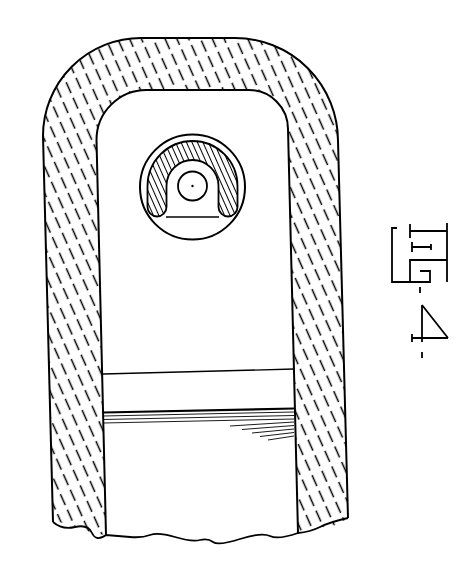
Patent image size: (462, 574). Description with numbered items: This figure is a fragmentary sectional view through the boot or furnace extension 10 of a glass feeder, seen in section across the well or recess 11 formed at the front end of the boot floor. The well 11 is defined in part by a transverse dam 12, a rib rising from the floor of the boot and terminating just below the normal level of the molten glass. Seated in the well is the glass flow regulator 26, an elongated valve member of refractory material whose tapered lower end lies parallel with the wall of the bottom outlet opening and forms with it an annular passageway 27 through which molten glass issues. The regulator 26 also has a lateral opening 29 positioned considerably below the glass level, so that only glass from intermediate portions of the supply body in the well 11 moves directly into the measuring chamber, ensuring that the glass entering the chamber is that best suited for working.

The boot or furnace extension 10 is at (347, 418).
The well or recess 11 is at (198, 353).
The transverse dam 12 is at (237, 377).
The glass flow regulator 26 is at (236, 199).
The annular passageway 27 is at (153, 159).
The lateral opening 29 is at (202, 217).